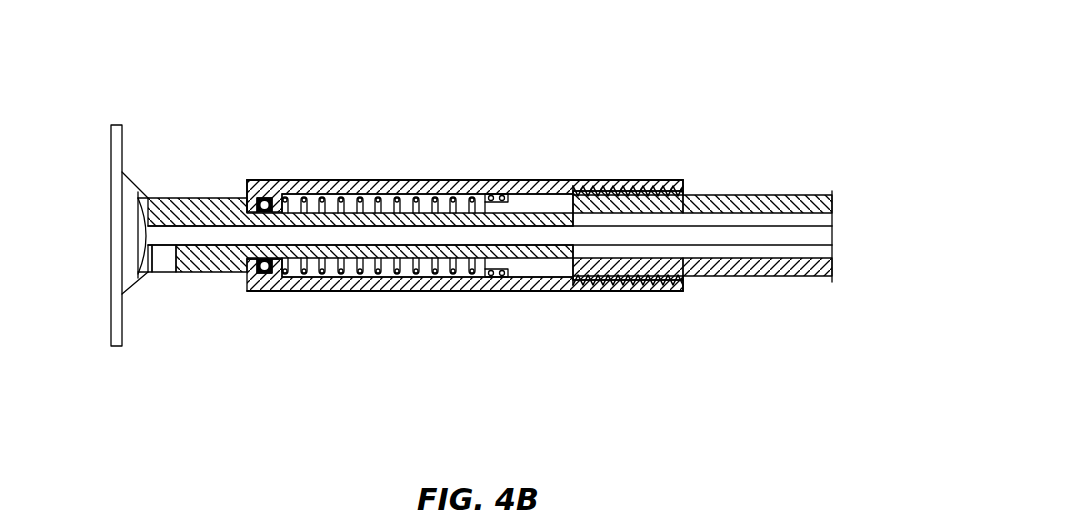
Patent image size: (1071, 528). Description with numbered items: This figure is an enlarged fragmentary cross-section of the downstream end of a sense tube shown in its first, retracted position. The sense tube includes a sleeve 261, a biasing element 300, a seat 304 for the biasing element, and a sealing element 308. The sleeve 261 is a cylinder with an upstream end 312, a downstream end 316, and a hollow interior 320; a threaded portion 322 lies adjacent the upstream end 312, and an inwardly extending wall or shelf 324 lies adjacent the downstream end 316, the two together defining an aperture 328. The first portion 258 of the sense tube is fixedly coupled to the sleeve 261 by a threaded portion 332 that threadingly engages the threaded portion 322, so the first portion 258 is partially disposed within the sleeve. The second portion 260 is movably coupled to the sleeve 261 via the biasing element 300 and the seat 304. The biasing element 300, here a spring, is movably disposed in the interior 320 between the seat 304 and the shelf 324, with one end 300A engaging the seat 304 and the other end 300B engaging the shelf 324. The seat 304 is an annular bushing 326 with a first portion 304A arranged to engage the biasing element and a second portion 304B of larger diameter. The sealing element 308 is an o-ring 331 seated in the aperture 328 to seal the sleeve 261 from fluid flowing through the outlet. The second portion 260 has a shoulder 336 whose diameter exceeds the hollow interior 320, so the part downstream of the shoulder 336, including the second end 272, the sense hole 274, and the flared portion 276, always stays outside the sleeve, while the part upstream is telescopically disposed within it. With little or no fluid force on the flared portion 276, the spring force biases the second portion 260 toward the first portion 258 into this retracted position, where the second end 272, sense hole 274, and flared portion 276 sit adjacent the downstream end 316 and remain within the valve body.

The first portion 258 is at (759, 308).
The second portion 260 is at (217, 294).
The sleeve 261 is at (548, 164).
The second end 272 is at (110, 198).
The sense hole 274 is at (167, 272).
The flared portion 276 is at (136, 292).
The biasing element 300 is at (395, 180).
The first end of the biasing element 300A is at (495, 194).
The second end of the biasing element 300B is at (298, 180).
The seat 304 is at (552, 268).
The first portion of the seat 304A is at (502, 278).
The second portion of the seat 304B is at (530, 268).
The sealing element 308 is at (262, 180).
The upstream end 312 is at (686, 186).
The downstream end 316 is at (245, 193).
The hollow interior 320 is at (348, 180).
The threaded portion 322 is at (623, 191).
The inwardly extending wall 324 is at (277, 259).
The annular bushing 326 is at (628, 269).
The aperture 328 is at (247, 274).
The o-ring 331 is at (268, 272).
The threaded portion 332 is at (666, 196).
The shoulder 336 is at (253, 201).